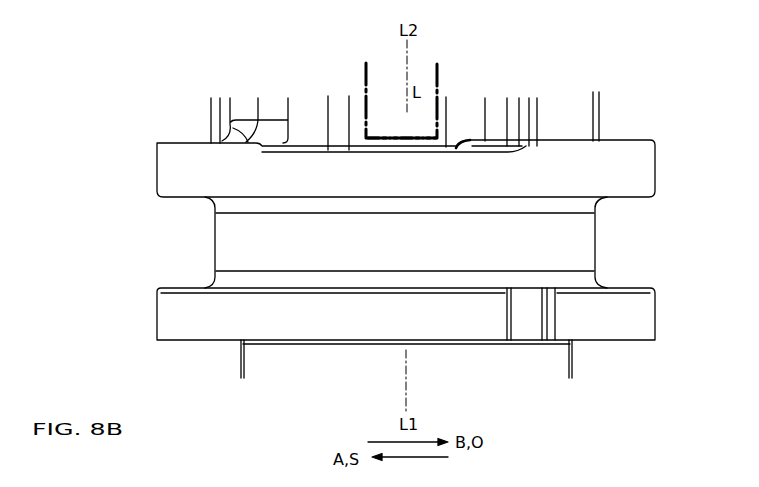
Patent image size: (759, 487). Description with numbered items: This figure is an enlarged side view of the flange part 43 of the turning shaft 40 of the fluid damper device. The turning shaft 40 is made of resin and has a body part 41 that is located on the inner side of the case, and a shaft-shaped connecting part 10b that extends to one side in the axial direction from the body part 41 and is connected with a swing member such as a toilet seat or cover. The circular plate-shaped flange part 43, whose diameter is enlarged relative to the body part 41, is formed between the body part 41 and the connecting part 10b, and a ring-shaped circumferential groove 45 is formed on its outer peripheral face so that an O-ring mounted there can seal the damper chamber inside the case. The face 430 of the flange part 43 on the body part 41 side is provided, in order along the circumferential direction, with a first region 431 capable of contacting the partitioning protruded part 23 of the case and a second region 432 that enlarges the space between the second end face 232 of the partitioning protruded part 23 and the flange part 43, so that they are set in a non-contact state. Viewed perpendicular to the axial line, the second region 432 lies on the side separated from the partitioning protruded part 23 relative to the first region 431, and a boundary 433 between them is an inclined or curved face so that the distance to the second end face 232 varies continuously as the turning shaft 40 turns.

The partitioning protruded part 23 is at (440, 70).
The second end face 232 is at (421, 137).
The turning shaft 40 is at (418, 216).
The body part 41 is at (598, 118).
The flange part 43 is at (433, 240).
The face 430 is at (240, 137).
The first region 431 is at (258, 156).
The second region 432 is at (510, 157).
The boundary 433 is at (537, 163).
The circumferential groove 45 is at (597, 246).
The connecting part 10b is at (562, 360).